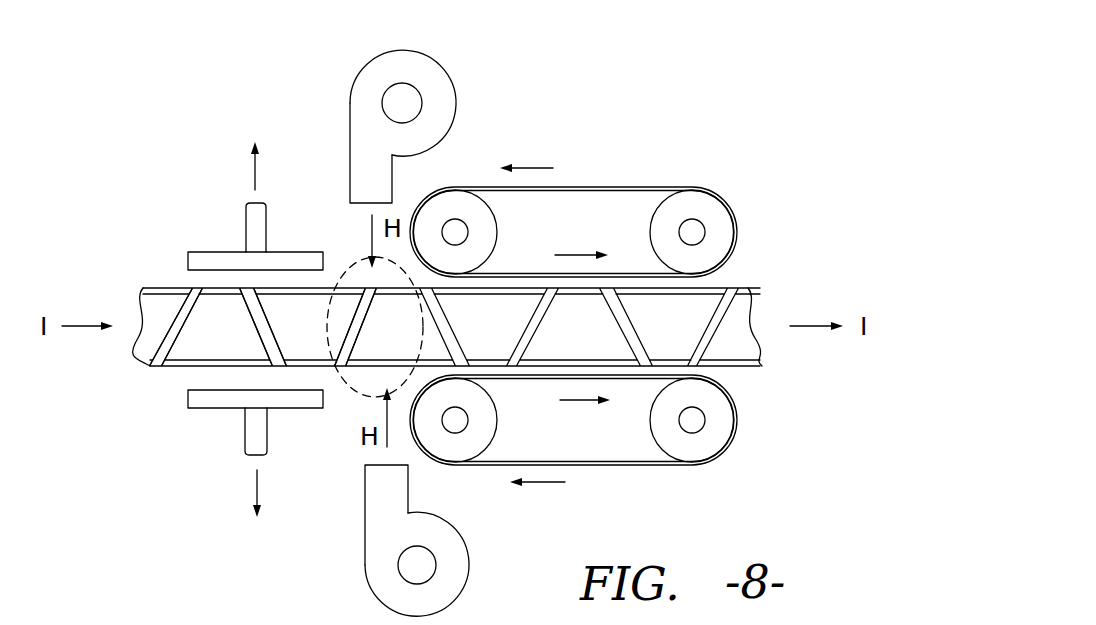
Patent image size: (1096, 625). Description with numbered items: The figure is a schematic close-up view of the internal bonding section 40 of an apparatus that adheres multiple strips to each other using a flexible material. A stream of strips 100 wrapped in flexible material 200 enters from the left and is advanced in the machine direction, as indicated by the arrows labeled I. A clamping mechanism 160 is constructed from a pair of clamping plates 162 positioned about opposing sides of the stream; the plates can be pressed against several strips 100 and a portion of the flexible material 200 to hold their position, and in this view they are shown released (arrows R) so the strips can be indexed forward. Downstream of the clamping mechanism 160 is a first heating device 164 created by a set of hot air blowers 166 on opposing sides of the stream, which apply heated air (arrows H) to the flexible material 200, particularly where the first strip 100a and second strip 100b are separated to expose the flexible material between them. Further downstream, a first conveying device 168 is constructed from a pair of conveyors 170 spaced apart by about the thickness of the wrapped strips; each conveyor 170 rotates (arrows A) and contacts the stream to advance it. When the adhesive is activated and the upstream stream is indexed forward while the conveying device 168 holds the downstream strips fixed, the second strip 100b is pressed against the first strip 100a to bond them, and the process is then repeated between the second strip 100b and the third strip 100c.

The internal bonding section 40 is at (728, 100).
The strips 100 is at (162, 303).
The first strip 100a is at (365, 352).
The second strip 100b is at (308, 304).
The third strip 100c is at (180, 353).
The clamping mechanism 160 is at (186, 185).
The clamping plates 162 is at (257, 220).
The first heating device 164 is at (322, 84).
The hot air blowers 166 is at (440, 102).
The first conveying device 168 is at (605, 152).
The conveyors 170 is at (640, 188).
The flexible material 200 is at (745, 368).